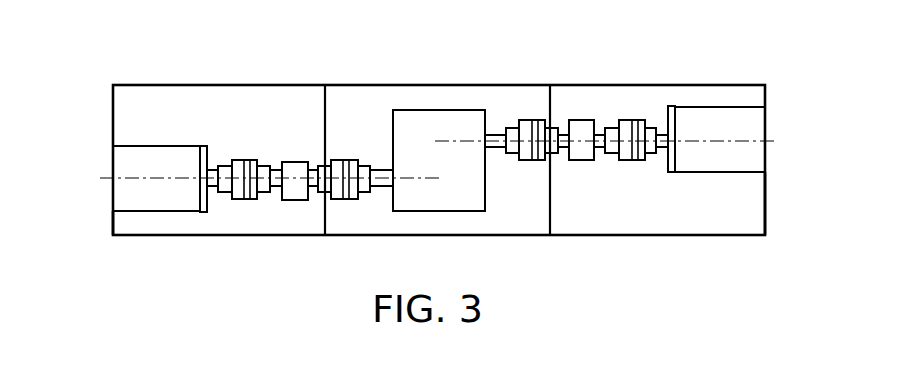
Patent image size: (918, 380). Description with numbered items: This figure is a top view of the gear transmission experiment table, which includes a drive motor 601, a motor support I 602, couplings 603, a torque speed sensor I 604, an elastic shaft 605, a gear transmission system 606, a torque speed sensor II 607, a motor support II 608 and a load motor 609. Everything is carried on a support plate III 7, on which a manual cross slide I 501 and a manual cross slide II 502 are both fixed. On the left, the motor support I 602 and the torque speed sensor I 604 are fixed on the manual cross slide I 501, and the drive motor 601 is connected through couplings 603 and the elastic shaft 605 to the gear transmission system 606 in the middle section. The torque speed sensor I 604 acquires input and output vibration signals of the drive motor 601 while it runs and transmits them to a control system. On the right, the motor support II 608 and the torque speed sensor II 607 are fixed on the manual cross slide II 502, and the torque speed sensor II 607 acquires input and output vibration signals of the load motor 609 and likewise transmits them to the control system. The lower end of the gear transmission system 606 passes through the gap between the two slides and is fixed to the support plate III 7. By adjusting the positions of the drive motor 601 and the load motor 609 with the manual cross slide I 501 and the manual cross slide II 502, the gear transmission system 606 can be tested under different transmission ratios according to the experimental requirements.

The support plate III 7 is at (497, 98).
The manual cross slide I 501 is at (117, 217).
The manual cross slide II 502 is at (755, 210).
The drive motor 601 is at (127, 155).
The motor support I 602 is at (200, 142).
The coupling 603 is at (253, 157).
The torque speed sensor I 604 is at (303, 158).
The elastic shaft 605 is at (390, 170).
The gear transmission system 606 is at (413, 120).
The torque speed sensor II 607 is at (585, 120).
The motor support II 608 is at (675, 120).
The load motor 609 is at (755, 123).